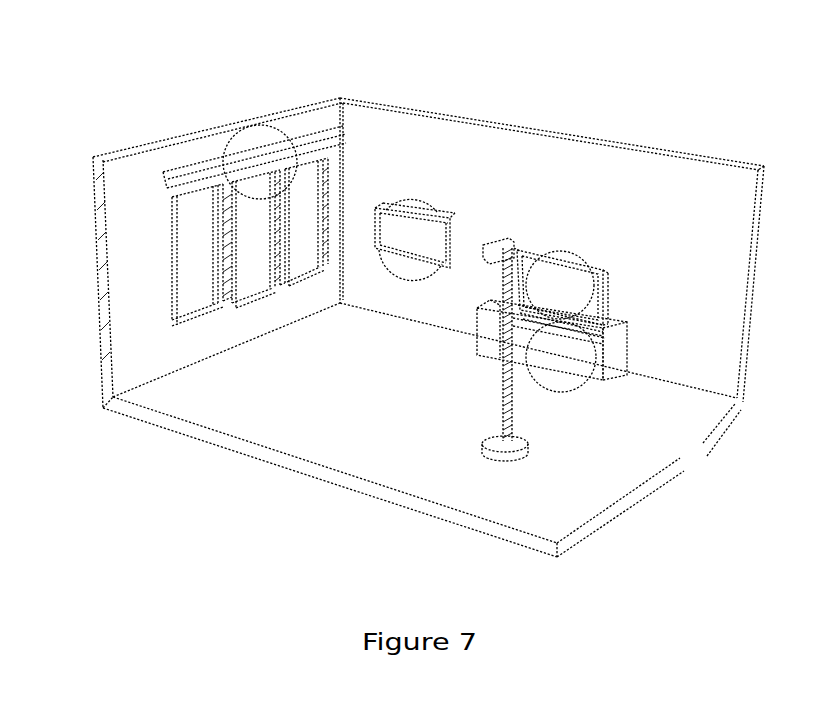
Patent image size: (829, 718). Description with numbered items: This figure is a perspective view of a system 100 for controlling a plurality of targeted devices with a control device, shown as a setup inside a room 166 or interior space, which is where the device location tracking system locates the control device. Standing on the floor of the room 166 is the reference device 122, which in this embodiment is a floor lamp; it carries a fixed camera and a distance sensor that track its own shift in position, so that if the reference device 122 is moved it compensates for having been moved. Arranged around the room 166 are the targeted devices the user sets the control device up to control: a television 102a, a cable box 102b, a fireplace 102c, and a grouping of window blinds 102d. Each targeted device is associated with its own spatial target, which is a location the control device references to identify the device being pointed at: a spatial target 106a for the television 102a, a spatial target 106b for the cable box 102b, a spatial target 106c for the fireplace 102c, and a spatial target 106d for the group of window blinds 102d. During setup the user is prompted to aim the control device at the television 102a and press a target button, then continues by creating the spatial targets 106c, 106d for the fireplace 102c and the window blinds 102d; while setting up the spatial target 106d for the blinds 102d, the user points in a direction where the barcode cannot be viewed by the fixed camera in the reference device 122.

The system 100 is at (124, 106).
The room 166 is at (110, 337).
The reference device 122 is at (497, 408).
The television 102a is at (607, 271).
The cable box 102b is at (565, 344).
The fireplace 102c is at (455, 214).
The grouping of window blinds 102d is at (310, 124).
The spatial target 106a is at (581, 249).
The spatial target 106b is at (570, 393).
The spatial target 106c is at (419, 190).
The spatial target 106d is at (247, 102).